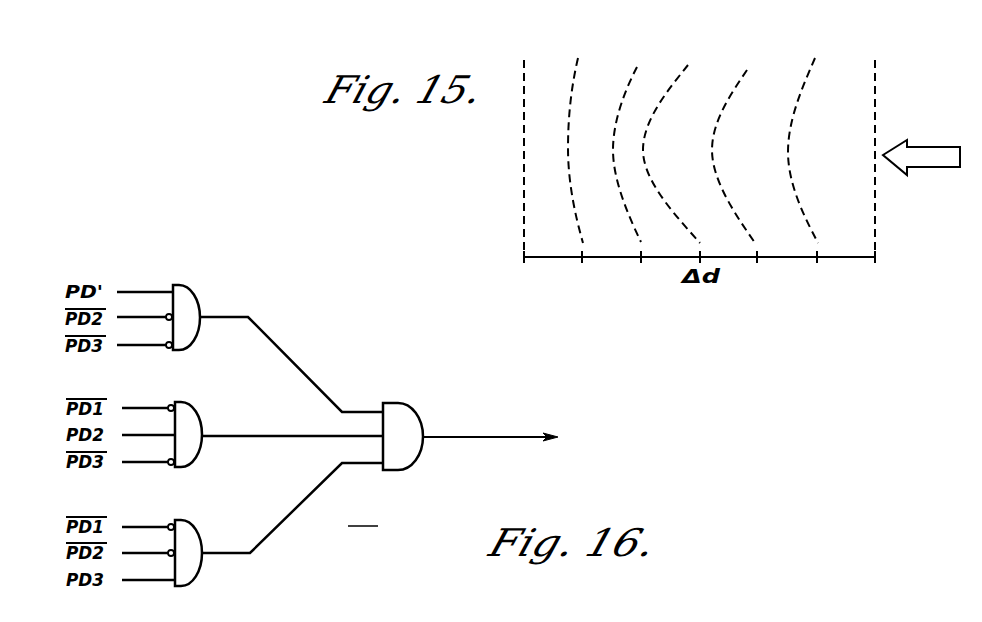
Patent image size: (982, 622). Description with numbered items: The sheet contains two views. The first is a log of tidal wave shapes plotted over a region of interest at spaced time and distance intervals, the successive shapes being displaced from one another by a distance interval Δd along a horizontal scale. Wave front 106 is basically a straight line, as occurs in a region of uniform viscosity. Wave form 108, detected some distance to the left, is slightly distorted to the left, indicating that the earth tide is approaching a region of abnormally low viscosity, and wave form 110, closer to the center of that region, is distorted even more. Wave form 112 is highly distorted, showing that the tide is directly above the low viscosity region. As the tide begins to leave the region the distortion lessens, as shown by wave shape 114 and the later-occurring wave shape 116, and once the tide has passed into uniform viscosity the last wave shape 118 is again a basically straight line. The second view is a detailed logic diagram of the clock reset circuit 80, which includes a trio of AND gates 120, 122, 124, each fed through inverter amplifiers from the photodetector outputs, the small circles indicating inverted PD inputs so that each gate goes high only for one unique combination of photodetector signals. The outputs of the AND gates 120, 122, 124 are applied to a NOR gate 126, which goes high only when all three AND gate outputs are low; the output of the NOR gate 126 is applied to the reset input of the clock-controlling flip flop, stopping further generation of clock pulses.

In FIG. 15, the wave front 106 is at (876, 67).
In FIG. 15, the wave form 108 is at (816, 60).
In FIG. 15, the wave form 110 is at (748, 68).
In FIG. 15, the wave form 112 is at (690, 63).
In FIG. 15, the wave shape 114 is at (636, 66).
In FIG. 15, the wave shape 116 is at (580, 57).
In FIG. 15, the wave shape 118 is at (526, 58).
In FIG. 16, the AND gate 120 is at (190, 295).
In FIG. 16, the AND gate 122 is at (183, 405).
In FIG. 16, the AND gate 124 is at (190, 527).
In FIG. 16, the NOR gate 126 is at (413, 410).
In FIG. 16, the clock reset circuit 80 is at (363, 514).